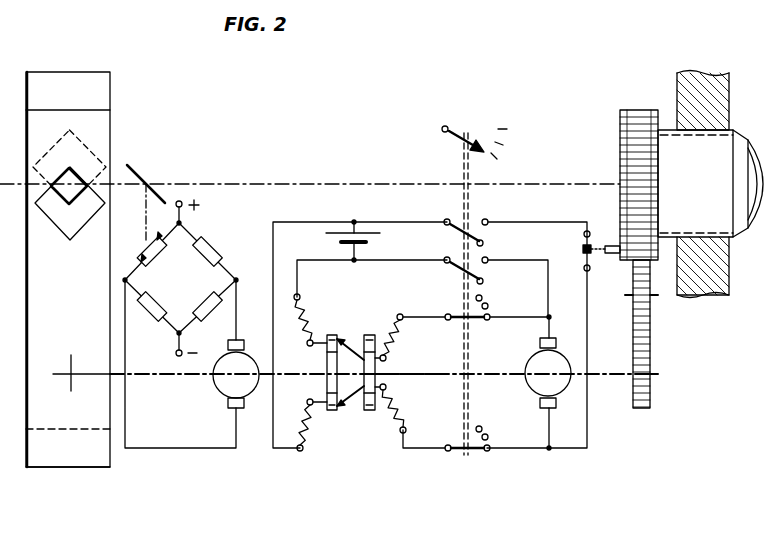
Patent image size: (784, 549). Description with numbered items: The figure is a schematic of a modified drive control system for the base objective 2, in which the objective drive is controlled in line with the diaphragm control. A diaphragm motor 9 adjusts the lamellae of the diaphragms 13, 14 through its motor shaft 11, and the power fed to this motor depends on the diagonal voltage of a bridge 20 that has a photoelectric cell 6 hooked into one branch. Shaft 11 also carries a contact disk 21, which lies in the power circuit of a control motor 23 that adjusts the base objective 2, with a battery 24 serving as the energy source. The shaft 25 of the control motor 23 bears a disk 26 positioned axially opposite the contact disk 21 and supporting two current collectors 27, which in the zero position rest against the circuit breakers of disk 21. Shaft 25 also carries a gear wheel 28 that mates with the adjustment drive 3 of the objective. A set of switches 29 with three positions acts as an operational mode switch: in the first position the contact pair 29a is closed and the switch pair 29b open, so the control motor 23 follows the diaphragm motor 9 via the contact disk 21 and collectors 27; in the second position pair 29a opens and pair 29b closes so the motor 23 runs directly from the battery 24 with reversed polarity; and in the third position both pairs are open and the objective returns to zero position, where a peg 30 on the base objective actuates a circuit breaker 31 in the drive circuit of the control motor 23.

The base objective 2 is at (713, 158).
The adjustment drive 3 is at (654, 318).
The photoelectric cell 6 is at (142, 249).
The diaphragm motor 9 is at (218, 386).
The motor shaft 11 is at (162, 377).
The diaphragm 13 is at (65, 456).
The diaphragm 14 is at (68, 83).
The bridge 20 is at (190, 293).
The contact disk 21 is at (332, 411).
The control motor 23 is at (530, 380).
The battery 24 is at (330, 241).
The shaft 25 is at (409, 378).
The disk 26 is at (370, 412).
The current collectors 27 is at (352, 344).
The gear wheel 28 is at (652, 389).
The set of switches 29 is at (448, 144).
The contact pair 29a is at (470, 322).
The switch pair 29b is at (496, 268).
The peg 30 is at (612, 256).
The circuit breaker 31 is at (581, 249).